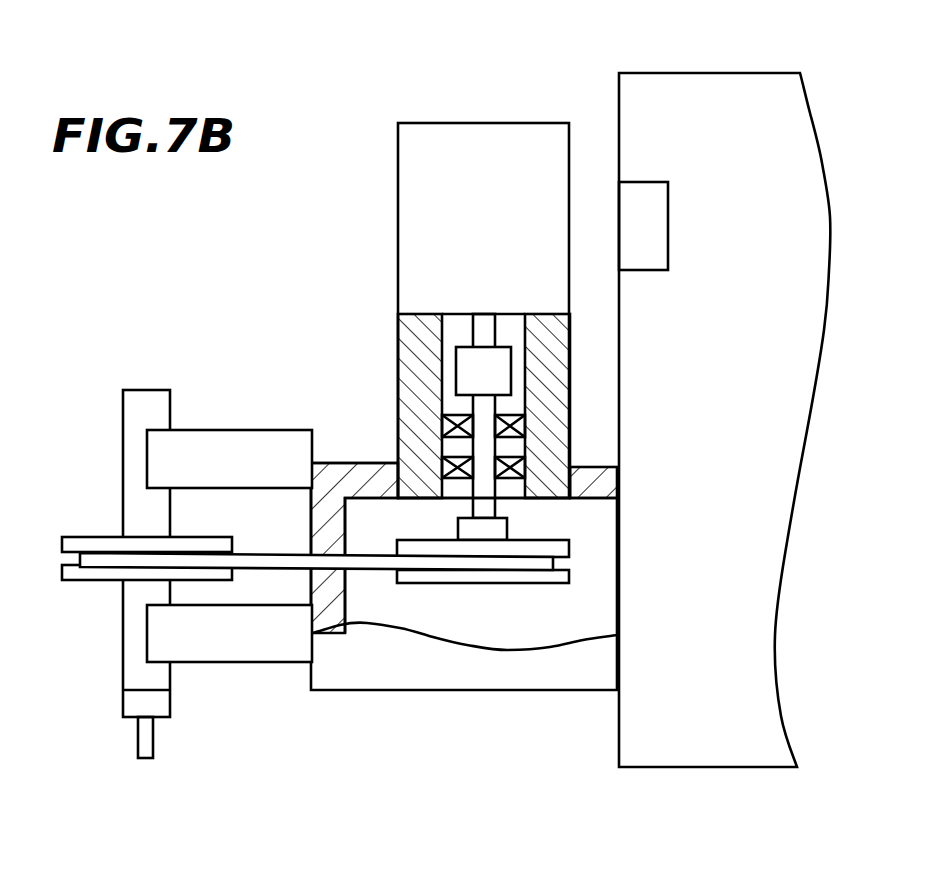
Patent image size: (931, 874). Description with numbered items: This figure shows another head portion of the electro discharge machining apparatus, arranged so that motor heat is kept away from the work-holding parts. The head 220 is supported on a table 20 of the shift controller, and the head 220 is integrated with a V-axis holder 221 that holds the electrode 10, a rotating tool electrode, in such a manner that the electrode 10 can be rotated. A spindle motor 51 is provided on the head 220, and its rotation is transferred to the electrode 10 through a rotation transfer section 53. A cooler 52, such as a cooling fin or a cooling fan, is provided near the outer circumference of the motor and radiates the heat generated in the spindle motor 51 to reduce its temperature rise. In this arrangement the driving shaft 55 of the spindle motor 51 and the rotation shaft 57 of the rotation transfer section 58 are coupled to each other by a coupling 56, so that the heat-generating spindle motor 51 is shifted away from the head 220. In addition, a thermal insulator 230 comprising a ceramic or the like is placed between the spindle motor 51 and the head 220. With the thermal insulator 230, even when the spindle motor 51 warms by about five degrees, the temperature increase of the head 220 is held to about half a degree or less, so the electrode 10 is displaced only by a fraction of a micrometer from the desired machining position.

The electrode 10 is at (138, 677).
The table 20 is at (689, 767).
The spindle motor 51 is at (395, 160).
The cooler 52 is at (618, 195).
The rotation transfer section 53 is at (353, 560).
The driving shaft 55 is at (482, 330).
The coupling 56 is at (473, 380).
The rotation shaft 57 is at (483, 452).
The rotation transfer section 58 is at (417, 575).
The head 220 is at (498, 697).
The V-axis holder 221 is at (210, 665).
The thermal insulator 230 is at (412, 343).